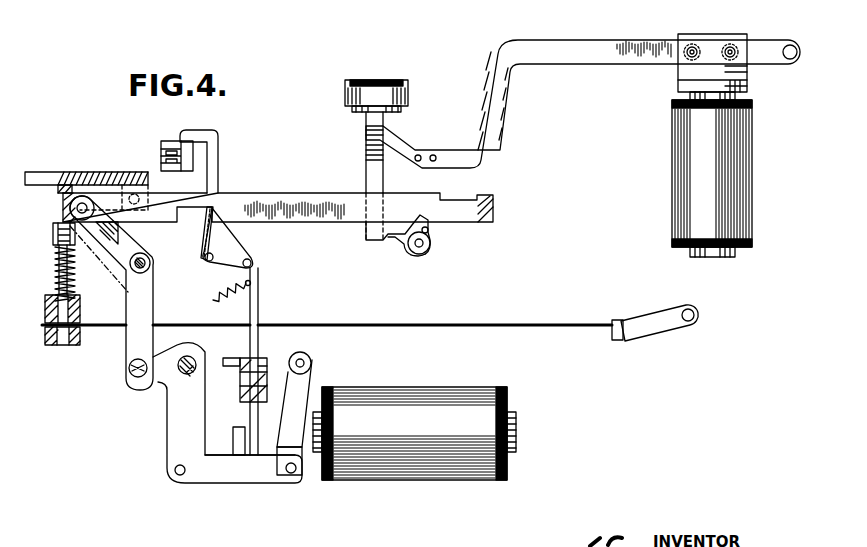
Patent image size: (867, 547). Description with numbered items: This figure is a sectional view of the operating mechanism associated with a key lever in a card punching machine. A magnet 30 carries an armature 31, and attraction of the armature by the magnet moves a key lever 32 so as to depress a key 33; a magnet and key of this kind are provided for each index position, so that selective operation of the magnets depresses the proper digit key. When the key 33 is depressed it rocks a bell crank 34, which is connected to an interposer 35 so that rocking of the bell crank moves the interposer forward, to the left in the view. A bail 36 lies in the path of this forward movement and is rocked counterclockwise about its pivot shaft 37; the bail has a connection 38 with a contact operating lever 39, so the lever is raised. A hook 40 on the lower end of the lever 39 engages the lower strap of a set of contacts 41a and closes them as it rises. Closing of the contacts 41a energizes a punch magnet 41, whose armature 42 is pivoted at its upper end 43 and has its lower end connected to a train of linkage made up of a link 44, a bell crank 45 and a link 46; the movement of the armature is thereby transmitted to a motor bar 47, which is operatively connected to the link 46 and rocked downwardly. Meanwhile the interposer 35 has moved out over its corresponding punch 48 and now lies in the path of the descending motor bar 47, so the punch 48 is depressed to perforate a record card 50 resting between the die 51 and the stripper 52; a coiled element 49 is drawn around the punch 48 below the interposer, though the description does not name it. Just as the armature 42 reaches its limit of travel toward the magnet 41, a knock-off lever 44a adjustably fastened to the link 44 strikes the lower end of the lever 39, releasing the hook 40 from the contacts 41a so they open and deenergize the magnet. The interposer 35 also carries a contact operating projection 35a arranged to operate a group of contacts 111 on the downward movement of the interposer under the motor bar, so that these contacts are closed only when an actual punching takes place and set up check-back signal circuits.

The magnet 30 is at (728, 160).
The armature 31 is at (687, 70).
The key lever 32 is at (527, 42).
The key 33 is at (384, 122).
The bell crank 34 is at (400, 245).
The interposer 35 is at (300, 210).
The contact operating projection 35a is at (214, 164).
The group of contacts 111 is at (160, 152).
The bail 36 is at (204, 225).
The pivot shaft 37 is at (208, 262).
The connection 38 is at (252, 263).
The contact operating lever 39 is at (259, 306).
The hook 40 is at (242, 406).
The punch magnet 41 is at (407, 440).
The contacts 41a is at (268, 378).
The armature 42 is at (309, 380).
The upper end pivot 43 is at (308, 357).
The link 44 is at (233, 470).
The knock-off lever 44a is at (236, 441).
The bell crank 45 is at (178, 418).
The link 46 is at (132, 297).
The motor bar 47 is at (90, 186).
The punch 48 is at (56, 238).
The compression spring 49 is at (60, 270).
The record card 50 is at (491, 324).
The die 51 is at (76, 335).
The stripper 52 is at (80, 312).